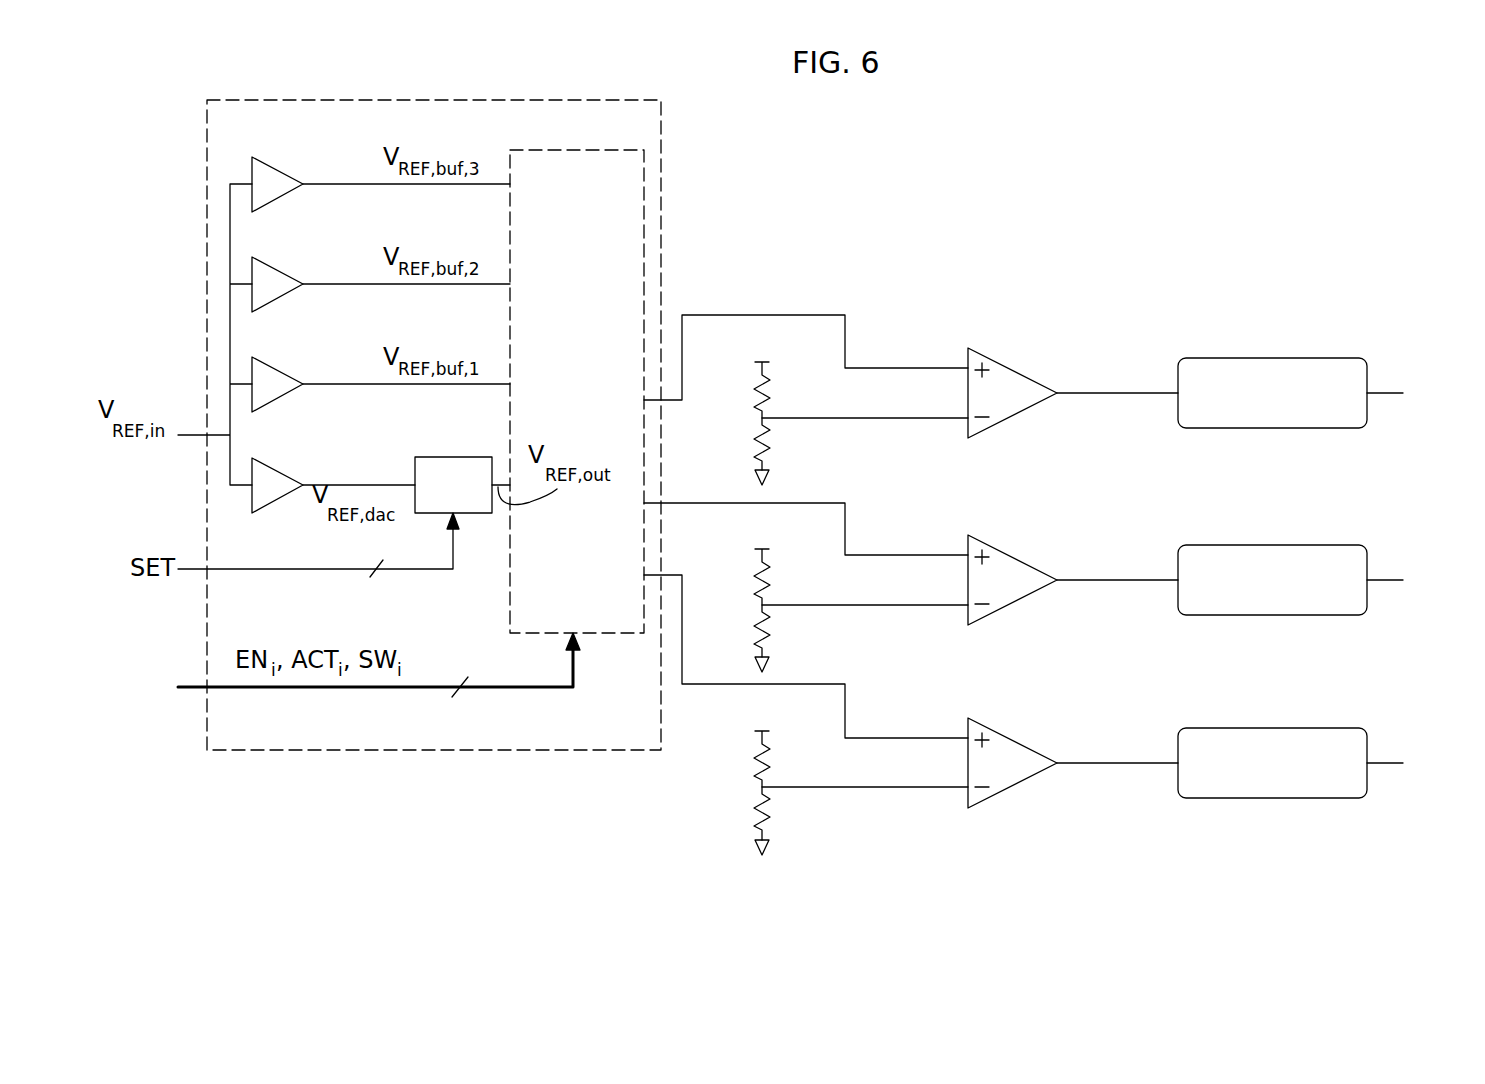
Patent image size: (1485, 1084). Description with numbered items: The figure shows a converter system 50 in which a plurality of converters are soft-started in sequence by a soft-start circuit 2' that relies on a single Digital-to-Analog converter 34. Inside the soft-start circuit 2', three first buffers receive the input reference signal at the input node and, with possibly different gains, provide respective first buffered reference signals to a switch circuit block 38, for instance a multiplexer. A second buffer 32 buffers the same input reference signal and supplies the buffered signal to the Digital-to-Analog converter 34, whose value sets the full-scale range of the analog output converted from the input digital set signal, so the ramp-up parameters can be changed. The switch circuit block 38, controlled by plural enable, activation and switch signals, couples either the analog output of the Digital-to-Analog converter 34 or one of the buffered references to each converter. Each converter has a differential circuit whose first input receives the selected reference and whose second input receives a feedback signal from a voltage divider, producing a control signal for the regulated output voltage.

The soft-start circuit 2' is at (434, 385).
The second buffer 32 is at (267, 478).
The Digital-to-Analog converter 34 is at (447, 466).
The switch circuit block 38 is at (510, 615).
The converter system 50 is at (1115, 248).